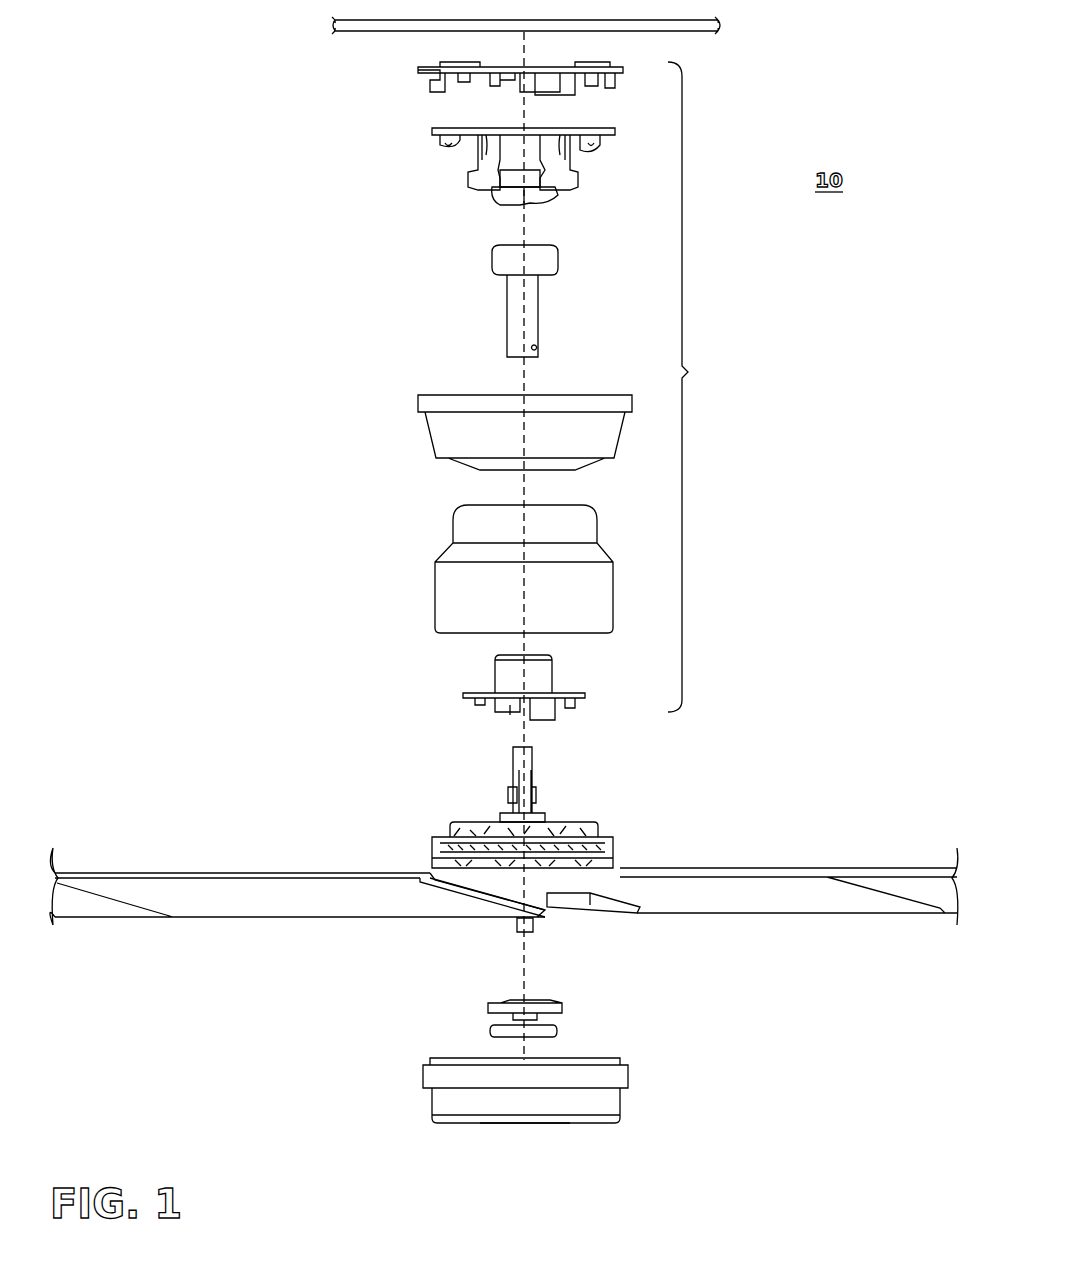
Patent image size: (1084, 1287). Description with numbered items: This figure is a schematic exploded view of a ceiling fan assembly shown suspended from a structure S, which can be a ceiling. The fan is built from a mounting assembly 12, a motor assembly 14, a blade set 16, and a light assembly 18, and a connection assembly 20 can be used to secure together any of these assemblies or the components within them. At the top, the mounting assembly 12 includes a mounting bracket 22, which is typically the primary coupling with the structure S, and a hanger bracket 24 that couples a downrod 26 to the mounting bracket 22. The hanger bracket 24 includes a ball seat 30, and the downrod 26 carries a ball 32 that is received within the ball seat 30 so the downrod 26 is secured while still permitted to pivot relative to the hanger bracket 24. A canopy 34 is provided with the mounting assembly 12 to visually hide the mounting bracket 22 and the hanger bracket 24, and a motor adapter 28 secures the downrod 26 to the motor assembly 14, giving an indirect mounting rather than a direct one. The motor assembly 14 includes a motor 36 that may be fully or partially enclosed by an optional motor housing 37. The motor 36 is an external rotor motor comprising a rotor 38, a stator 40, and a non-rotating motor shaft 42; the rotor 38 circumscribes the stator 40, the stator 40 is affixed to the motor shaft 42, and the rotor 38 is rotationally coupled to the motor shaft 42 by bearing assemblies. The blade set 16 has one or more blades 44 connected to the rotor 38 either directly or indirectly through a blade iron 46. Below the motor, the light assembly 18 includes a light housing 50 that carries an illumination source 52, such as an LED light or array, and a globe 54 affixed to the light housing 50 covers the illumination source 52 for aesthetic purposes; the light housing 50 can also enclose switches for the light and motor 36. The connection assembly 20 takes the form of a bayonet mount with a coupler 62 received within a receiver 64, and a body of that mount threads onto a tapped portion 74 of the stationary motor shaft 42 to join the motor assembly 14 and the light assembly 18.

The structure S is at (698, 33).
The mounting assembly 12 is at (696, 387).
The motor assembly 14 is at (544, 824).
The blade set 16 is at (795, 918).
The light assembly 18 is at (526, 1100).
The connection assembly 20 is at (511, 1012).
The mounting bracket 22 is at (418, 72).
The hanger bracket 24 is at (430, 133).
The downrod 26 is at (507, 300).
The motor adapter 28 is at (493, 672).
The ball seat 30 is at (493, 190).
The ball 32 is at (492, 260).
The canopy 34 is at (418, 430).
The motor 36 is at (450, 826).
The motor housing 37 is at (432, 580).
The rotor 38 is at (450, 918).
The stator 40 is at (440, 848).
The motor shaft 42 is at (517, 770).
The blades 44 is at (226, 873).
The blade iron 46 is at (608, 912).
The light housing 50 is at (423, 1077).
The illumination source 52 is at (445, 1100).
The globe 54 is at (480, 1125).
The coupler 62 is at (490, 1010).
The receiver 64 is at (490, 1030).
The tapped portion 74 is at (525, 930).